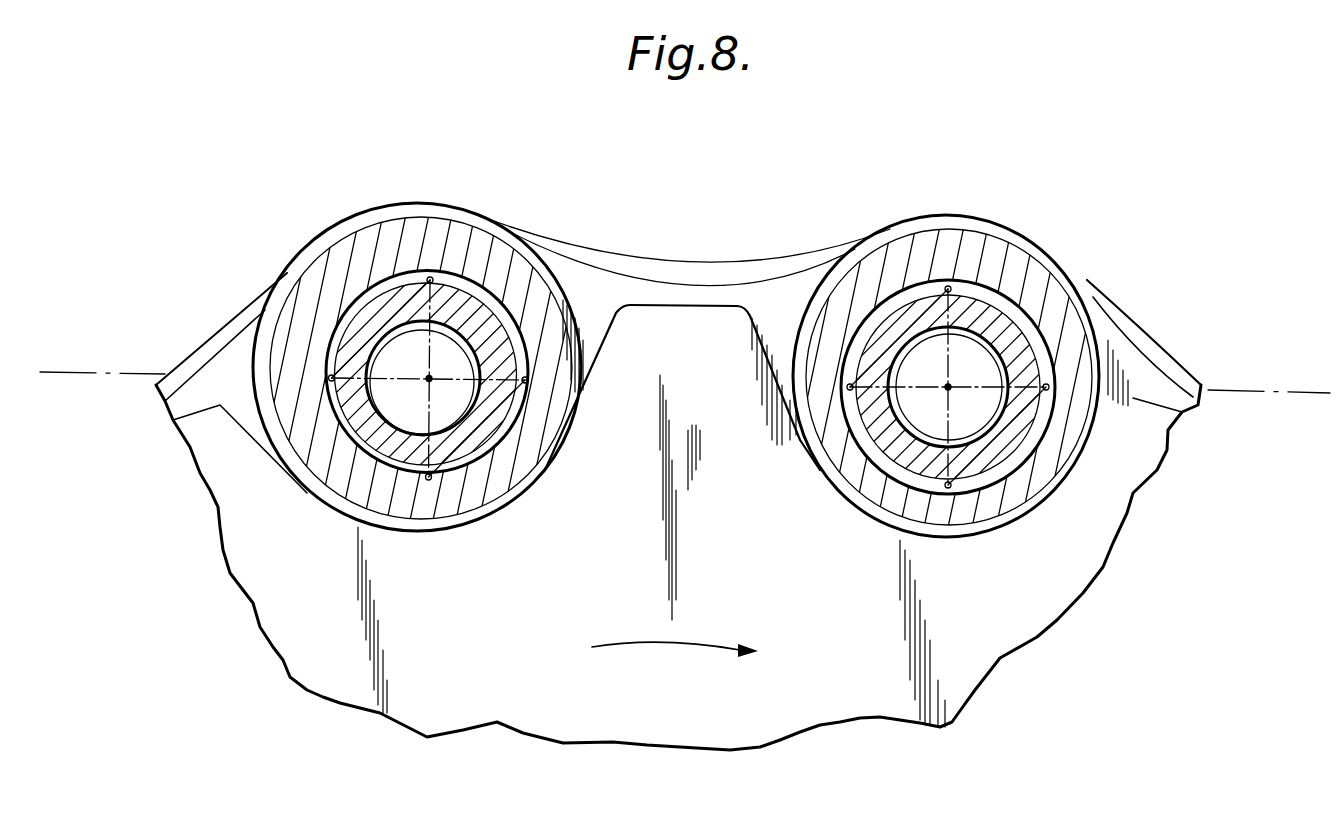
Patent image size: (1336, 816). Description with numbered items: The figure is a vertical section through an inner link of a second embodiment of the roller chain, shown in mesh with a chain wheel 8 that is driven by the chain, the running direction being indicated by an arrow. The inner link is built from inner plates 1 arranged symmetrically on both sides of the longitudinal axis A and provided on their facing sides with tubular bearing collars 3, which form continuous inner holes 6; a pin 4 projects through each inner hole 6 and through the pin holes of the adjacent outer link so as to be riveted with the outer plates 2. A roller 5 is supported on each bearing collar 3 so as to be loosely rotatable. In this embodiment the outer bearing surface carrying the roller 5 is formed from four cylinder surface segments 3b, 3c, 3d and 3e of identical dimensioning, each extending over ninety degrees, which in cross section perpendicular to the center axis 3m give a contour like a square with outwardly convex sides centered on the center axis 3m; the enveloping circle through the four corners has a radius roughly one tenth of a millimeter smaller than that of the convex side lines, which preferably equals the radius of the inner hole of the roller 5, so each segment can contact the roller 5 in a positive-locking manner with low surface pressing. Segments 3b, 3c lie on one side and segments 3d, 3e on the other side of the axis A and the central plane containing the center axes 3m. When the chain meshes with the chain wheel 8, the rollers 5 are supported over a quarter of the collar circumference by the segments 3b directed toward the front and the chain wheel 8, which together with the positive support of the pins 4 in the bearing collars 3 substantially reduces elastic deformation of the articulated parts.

The inner plate 1 is at (676, 270).
The outer plate 2 is at (217, 380).
The bearing collar 3 is at (447, 452).
The cylinder surface segment 3b is at (487, 453).
The cylinder surface segment 3c is at (327, 443).
The cylinder surface segment 3d is at (348, 327).
The cylinder surface segment 3e is at (473, 285).
The center axis 3m is at (429, 378).
The pin 4 is at (458, 387).
The roller 5 is at (448, 247).
The inner hole 6 is at (470, 417).
The chain wheel 8 is at (1027, 615).
The longitudinal axis A is at (58, 373).